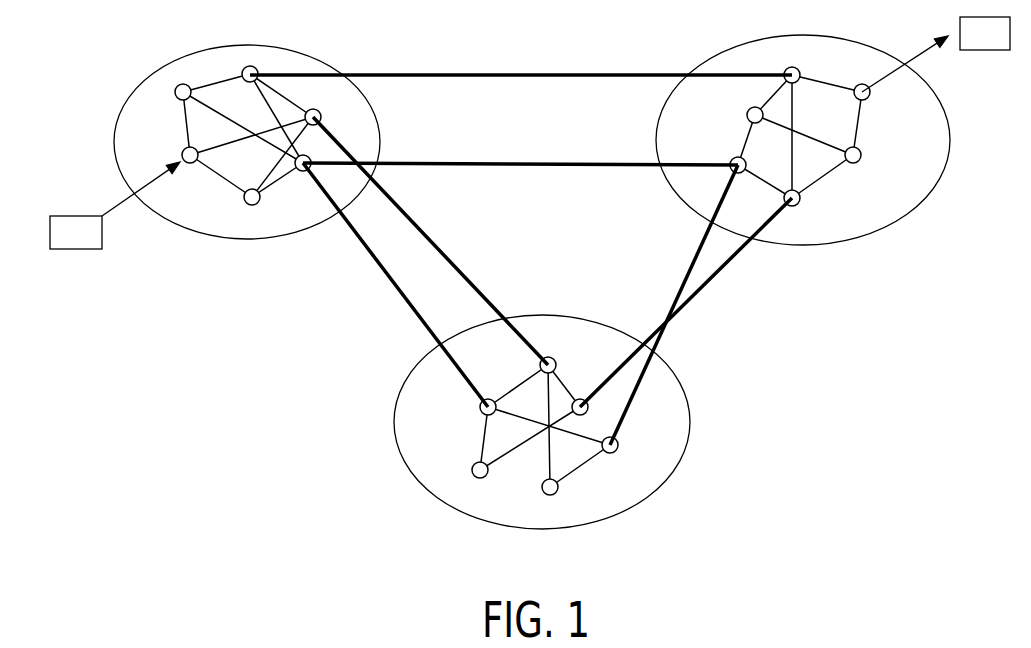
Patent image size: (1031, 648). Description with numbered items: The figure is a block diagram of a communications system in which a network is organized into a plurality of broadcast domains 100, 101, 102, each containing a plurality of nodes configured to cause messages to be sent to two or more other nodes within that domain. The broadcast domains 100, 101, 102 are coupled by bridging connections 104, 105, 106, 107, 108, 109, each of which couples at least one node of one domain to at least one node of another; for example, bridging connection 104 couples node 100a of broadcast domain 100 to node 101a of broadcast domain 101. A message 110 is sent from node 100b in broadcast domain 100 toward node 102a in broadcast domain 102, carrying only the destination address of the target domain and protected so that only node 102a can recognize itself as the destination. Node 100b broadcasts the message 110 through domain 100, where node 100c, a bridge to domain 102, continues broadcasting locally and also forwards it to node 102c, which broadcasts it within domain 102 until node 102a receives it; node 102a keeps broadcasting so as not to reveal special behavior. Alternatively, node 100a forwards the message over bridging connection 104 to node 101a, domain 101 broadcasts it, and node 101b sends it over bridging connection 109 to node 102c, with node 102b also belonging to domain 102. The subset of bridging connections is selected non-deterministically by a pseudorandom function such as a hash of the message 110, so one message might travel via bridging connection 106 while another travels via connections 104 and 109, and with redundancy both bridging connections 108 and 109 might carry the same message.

The broadcast domain 100 is at (232, 239).
The node 100a is at (303, 172).
The node 100b is at (182, 153).
The node 100c is at (250, 66).
The broadcast domain 101 is at (450, 507).
The node 101a is at (482, 412).
The node 101b is at (617, 450).
The broadcast domain 102 is at (913, 210).
The node 102a is at (865, 83).
The node 102b is at (735, 160).
The node 102c is at (788, 67).
The bridging connection 104 is at (393, 288).
The bridging connection 105 is at (478, 285).
The bridging connection 106 is at (565, 72).
The bridging connection 107 is at (552, 160).
The bridging connection 108 is at (719, 270).
The bridging connection 109 is at (694, 263).
The message 110 is at (90, 251).